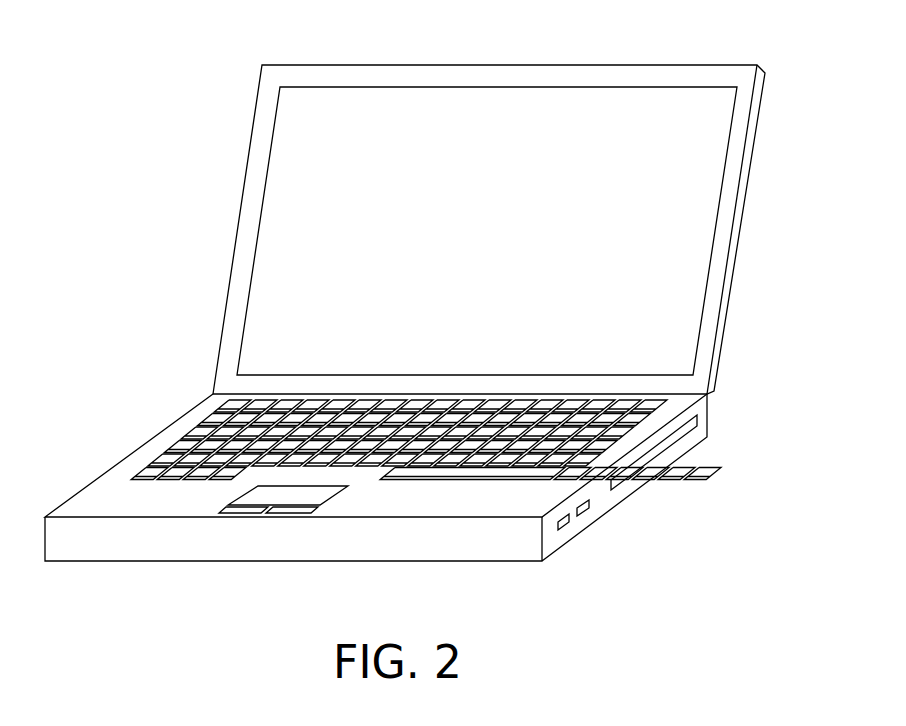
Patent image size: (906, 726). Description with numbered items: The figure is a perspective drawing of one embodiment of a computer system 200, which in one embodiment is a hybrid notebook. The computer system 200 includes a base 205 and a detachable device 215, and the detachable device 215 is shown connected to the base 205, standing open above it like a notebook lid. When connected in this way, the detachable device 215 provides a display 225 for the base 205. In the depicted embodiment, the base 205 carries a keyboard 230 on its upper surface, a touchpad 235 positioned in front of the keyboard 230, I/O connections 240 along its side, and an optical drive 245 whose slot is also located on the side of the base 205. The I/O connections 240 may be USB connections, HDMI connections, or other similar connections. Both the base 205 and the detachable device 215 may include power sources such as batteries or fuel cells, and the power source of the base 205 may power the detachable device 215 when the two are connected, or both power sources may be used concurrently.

The computer system 200 is at (120, 143).
The base 205 is at (150, 438).
The detachable device 215 is at (243, 240).
The display 225 is at (263, 293).
The keyboard 230 is at (227, 410).
The touchpad 235 is at (260, 493).
The I/O connections 240 is at (583, 507).
The optical drive 245 is at (707, 410).